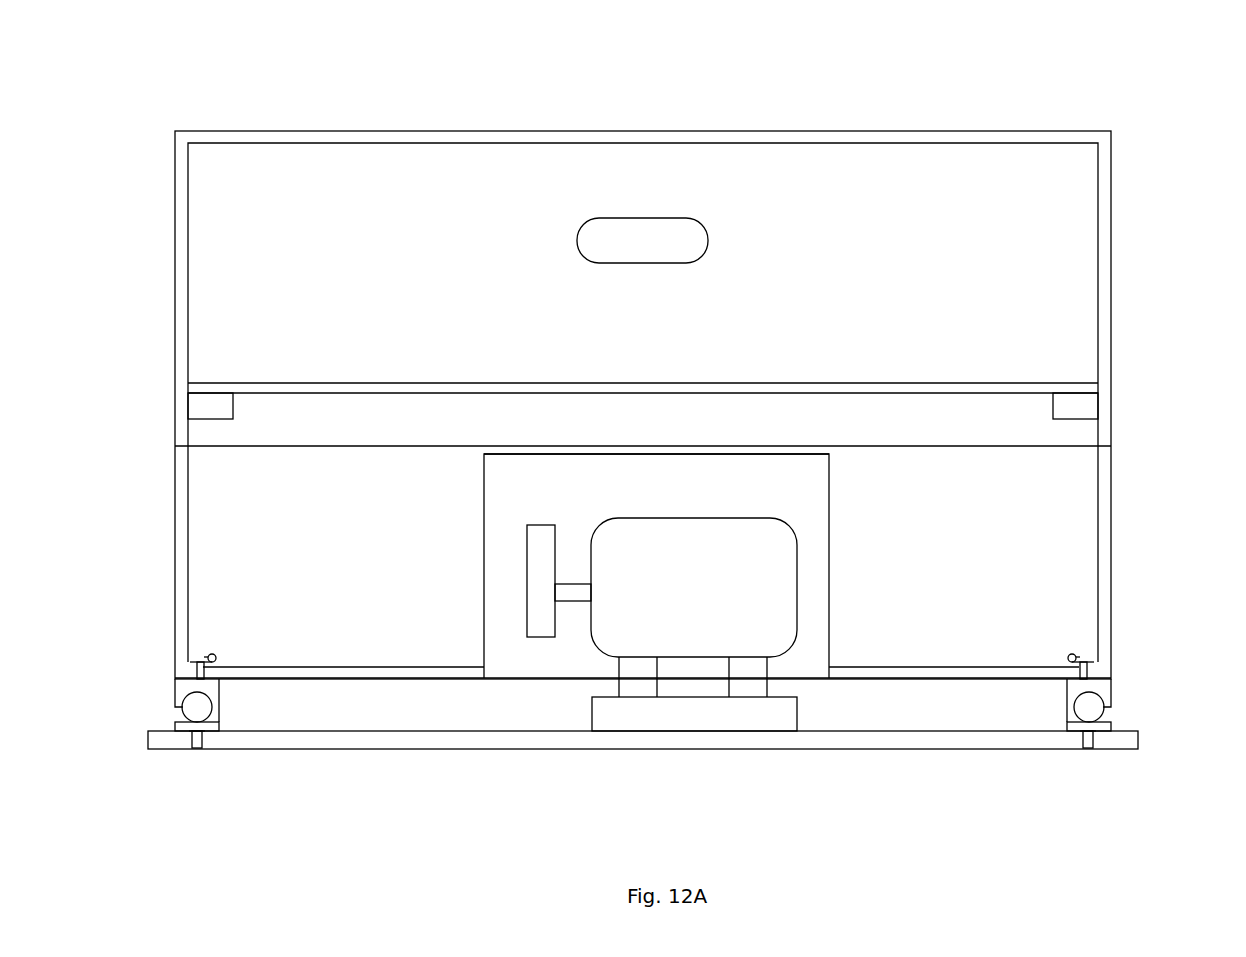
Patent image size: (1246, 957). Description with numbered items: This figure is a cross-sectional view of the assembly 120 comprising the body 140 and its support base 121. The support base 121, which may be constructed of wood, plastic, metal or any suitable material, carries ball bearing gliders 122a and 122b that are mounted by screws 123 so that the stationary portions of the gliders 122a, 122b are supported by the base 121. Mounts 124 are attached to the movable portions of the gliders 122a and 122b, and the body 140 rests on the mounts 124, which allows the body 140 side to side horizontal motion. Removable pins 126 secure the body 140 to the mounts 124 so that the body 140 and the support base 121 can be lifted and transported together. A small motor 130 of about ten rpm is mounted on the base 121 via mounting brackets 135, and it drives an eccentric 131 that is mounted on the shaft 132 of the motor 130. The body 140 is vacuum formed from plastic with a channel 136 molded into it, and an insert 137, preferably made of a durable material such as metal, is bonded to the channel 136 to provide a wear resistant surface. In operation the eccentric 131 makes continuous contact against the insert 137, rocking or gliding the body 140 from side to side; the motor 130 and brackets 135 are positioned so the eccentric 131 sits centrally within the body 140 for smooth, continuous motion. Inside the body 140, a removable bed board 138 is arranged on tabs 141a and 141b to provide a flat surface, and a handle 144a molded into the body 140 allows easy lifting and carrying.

The drive unit assembly 120 is at (148, 68).
The support base 121 is at (149, 738).
The ball bearing glider 122a is at (175, 693).
The ball bearing glider 122b is at (1112, 693).
The screws 123 is at (197, 752).
The mounts 124 is at (188, 670).
The removable pins 126 is at (215, 648).
The motor 130 is at (698, 600).
The eccentric 131 is at (527, 553).
The shaft 132 is at (575, 603).
The mounting brackets 135 is at (630, 700).
The channel 136 is at (508, 640).
The insert 137 is at (663, 446).
The bed board 138 is at (233, 381).
The body 140 is at (175, 250).
The tab 141a is at (188, 407).
The tab 141b is at (1098, 407).
The handle 144a is at (643, 215).